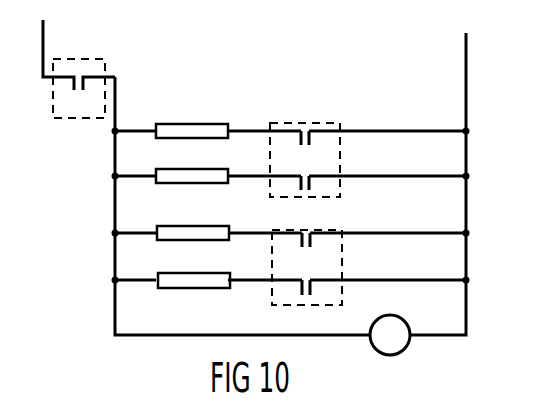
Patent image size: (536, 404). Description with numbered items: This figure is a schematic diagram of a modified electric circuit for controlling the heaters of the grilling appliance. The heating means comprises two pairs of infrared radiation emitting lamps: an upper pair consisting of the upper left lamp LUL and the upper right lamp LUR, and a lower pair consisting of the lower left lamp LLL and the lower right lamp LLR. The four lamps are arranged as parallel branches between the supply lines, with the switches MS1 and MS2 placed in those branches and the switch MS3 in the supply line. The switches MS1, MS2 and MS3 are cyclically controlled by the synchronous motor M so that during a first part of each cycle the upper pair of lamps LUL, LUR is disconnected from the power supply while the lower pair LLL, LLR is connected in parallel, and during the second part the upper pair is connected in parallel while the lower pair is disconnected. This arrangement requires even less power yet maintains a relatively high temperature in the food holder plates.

The switch MS3 is at (79, 69).
The upper left lamp LUL is at (192, 115).
The lower right lamp LLR is at (192, 162).
The upper right lamp LUR is at (193, 218).
The lower left lamp LLL is at (194, 266).
The switch MS1 is at (305, 144).
The switch MS2 is at (307, 250).
The synchronous motor M is at (390, 335).